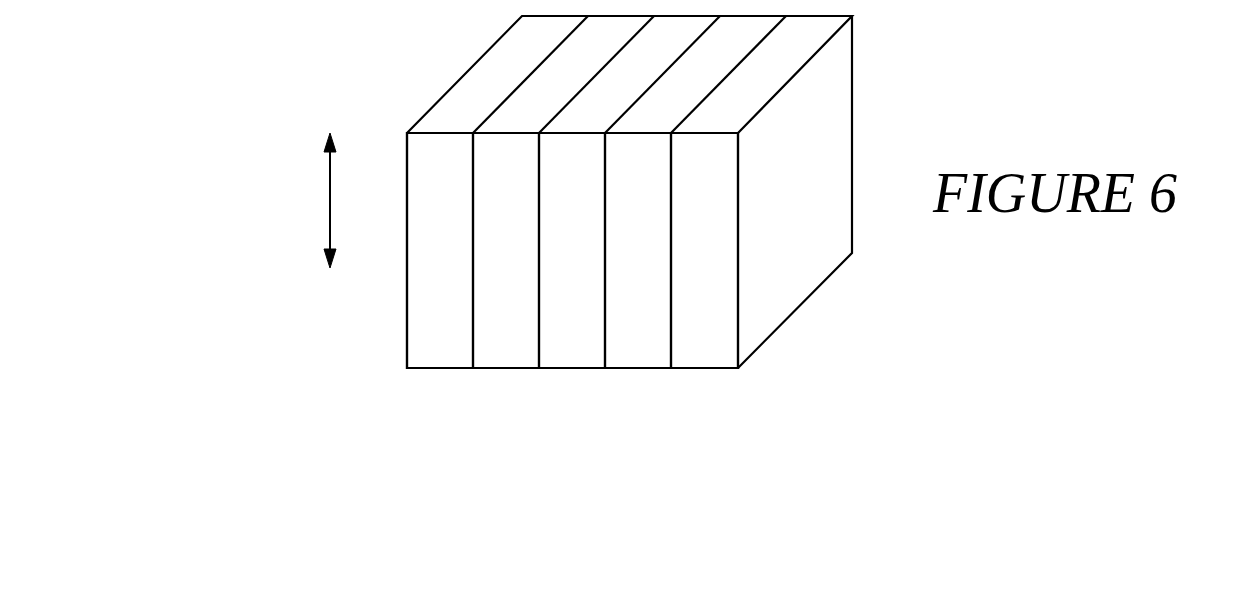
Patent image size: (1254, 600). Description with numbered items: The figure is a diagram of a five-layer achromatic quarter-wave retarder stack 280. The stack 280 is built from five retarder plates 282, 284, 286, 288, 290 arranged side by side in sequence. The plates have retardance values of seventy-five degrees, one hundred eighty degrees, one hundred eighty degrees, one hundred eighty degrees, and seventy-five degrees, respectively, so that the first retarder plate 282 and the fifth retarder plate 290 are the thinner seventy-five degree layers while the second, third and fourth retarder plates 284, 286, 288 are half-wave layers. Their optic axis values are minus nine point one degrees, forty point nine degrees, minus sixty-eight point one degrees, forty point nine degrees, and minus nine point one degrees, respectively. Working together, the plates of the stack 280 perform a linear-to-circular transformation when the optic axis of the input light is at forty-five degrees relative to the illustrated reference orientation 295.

The achromatic quarter-wave plate retarder stack 280 is at (430, 83).
The retarder plate 282 is at (424, 250).
The retarder plate 284 is at (490, 250).
The retarder plate 286 is at (556, 250).
The retarder plate 288 is at (622, 250).
The retarder plate 290 is at (688, 250).
The reference orientation 295 is at (328, 167).